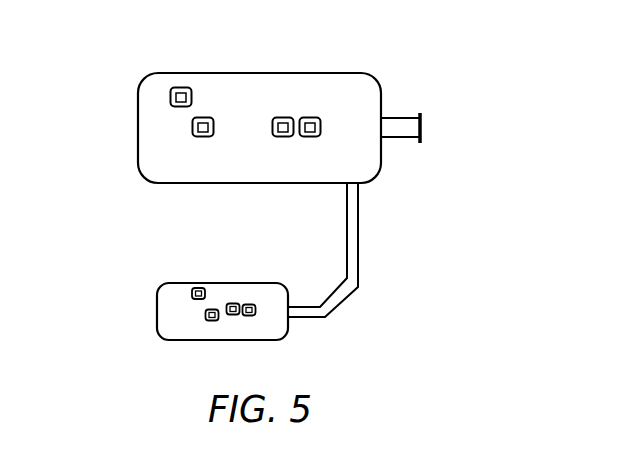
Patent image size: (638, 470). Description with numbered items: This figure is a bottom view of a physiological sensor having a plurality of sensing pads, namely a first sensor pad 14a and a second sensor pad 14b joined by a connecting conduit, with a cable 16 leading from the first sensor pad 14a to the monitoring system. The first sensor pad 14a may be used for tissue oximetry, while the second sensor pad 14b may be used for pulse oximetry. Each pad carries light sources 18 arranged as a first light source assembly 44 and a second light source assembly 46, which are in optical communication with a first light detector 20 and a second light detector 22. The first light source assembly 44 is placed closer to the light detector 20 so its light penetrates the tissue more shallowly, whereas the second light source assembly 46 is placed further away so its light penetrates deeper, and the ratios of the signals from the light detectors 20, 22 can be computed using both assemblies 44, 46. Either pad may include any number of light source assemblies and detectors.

The first sensor pad 14a is at (150, 126).
The second sensor pad 14b is at (168, 310).
The cable 16 is at (400, 118).
The light sources 18 is at (203, 141).
The first light detector 20 is at (282, 118).
The second light detector 22 is at (313, 138).
The first light source assembly 44 is at (182, 87).
The second light source assembly 46 is at (191, 127).